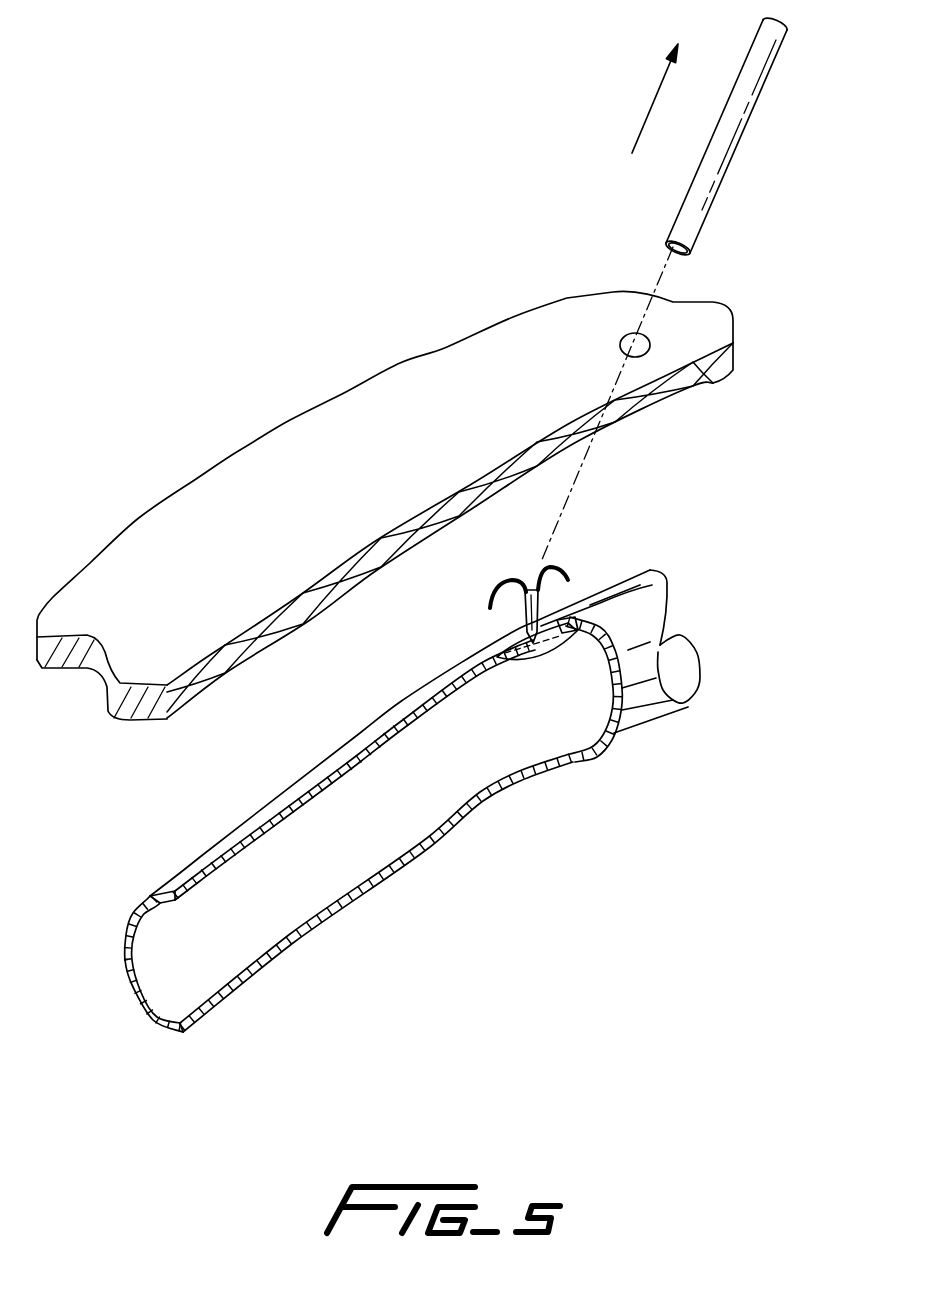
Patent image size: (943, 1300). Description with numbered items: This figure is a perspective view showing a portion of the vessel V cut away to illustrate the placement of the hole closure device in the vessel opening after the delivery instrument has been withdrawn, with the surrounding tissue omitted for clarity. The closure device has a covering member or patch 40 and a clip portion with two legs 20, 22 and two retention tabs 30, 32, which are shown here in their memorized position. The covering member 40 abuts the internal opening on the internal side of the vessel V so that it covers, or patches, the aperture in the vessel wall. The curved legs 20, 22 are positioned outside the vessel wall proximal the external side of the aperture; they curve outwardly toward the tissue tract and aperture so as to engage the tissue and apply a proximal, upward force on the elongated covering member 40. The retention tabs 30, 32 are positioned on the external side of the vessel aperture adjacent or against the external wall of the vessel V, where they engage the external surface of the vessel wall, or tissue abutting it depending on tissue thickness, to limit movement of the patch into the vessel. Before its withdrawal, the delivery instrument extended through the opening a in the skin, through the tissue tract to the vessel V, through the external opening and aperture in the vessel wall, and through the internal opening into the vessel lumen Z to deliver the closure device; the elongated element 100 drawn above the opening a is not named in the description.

The fastening pin 100 is at (725, 160).
The opening in the skin a is at (628, 332).
The leg 20 is at (537, 578).
The leg 22 is at (492, 597).
The retention tab 30 is at (648, 576).
The vessel V is at (438, 797).
The retention tab 32 is at (574, 632).
The covering member 40 is at (513, 676).
The vessel lumen Z is at (554, 751).